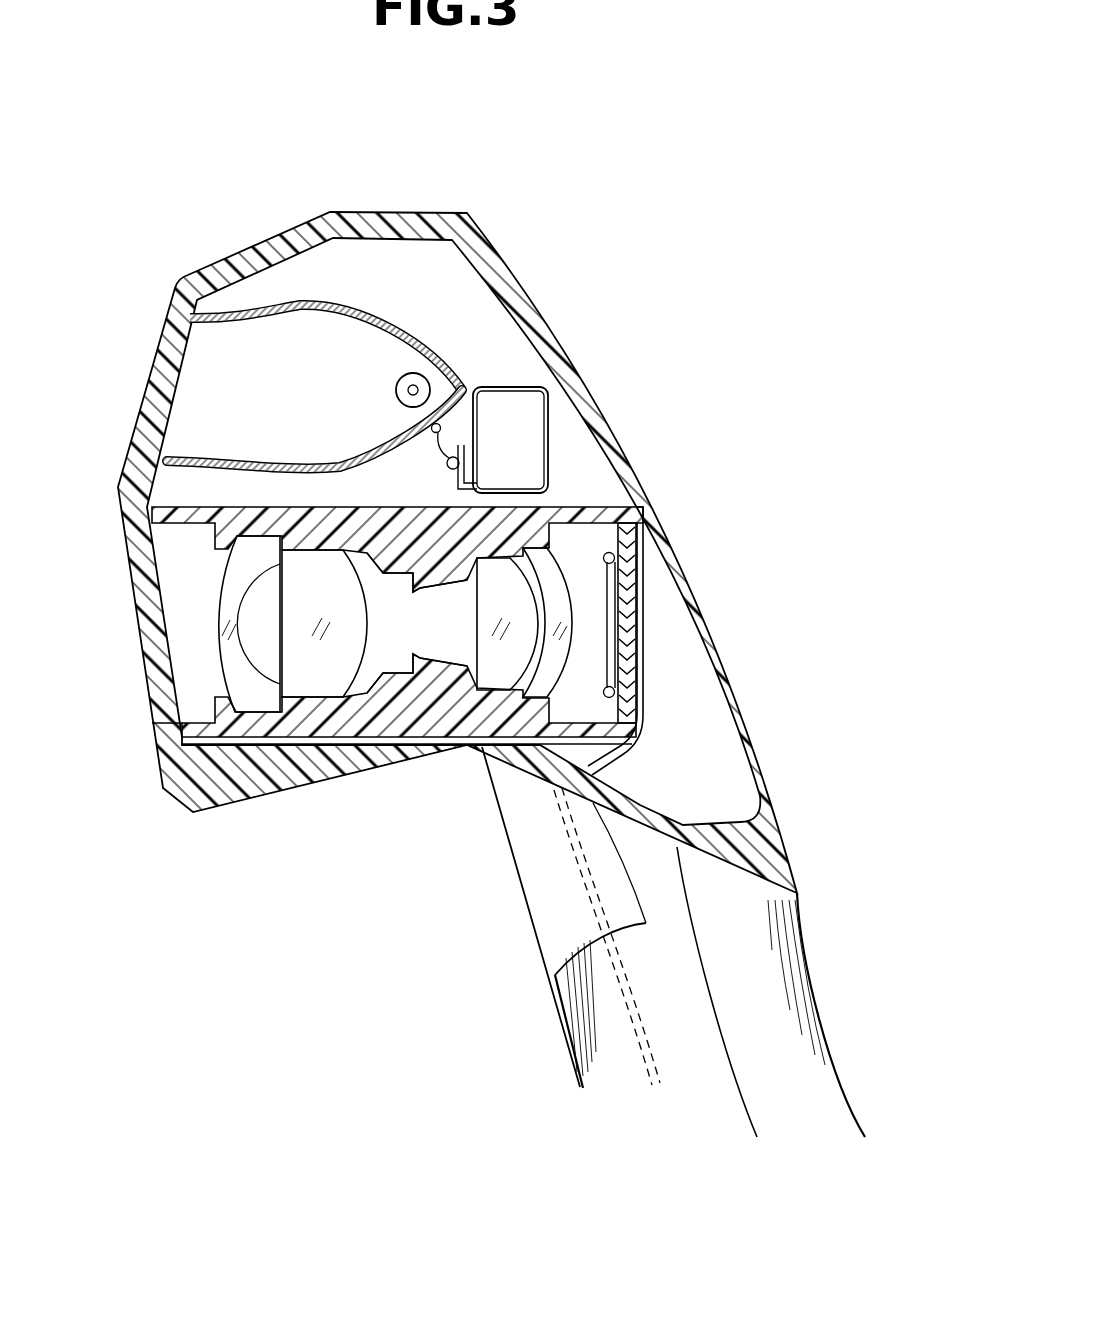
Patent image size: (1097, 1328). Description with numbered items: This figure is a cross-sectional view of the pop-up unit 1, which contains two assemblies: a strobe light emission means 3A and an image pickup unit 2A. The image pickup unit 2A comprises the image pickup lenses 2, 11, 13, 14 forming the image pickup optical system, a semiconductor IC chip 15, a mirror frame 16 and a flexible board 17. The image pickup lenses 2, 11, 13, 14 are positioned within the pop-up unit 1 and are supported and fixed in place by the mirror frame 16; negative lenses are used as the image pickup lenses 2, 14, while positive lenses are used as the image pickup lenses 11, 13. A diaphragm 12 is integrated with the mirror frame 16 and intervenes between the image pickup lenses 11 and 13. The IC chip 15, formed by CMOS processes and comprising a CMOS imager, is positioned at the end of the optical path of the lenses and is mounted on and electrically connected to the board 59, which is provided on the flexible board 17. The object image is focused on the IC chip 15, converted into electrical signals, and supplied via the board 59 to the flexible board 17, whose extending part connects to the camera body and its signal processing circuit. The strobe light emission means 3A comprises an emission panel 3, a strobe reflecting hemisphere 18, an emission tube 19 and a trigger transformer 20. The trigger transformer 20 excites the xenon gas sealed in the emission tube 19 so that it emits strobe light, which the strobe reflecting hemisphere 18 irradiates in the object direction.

The pop-up unit 1 is at (688, 284).
The image pickup lens 2 is at (222, 663).
The image pickup unit 2A is at (185, 584).
The emission panel 3 is at (168, 338).
The strobe light emission means 3A is at (196, 377).
The image pickup lens 11 is at (315, 667).
The diaphragm 12 is at (399, 679).
The image pickup lens 13 is at (492, 673).
The image pickup lens 14 is at (538, 680).
The semiconductor IC chip 15 is at (627, 590).
The mirror frame 16 is at (262, 724).
The flexible board 17 is at (645, 1062).
The strobe reflecting hemisphere 18 is at (193, 455).
The emission tube 19 is at (413, 372).
The trigger transformer 20 is at (510, 417).
The board 59 is at (647, 518).